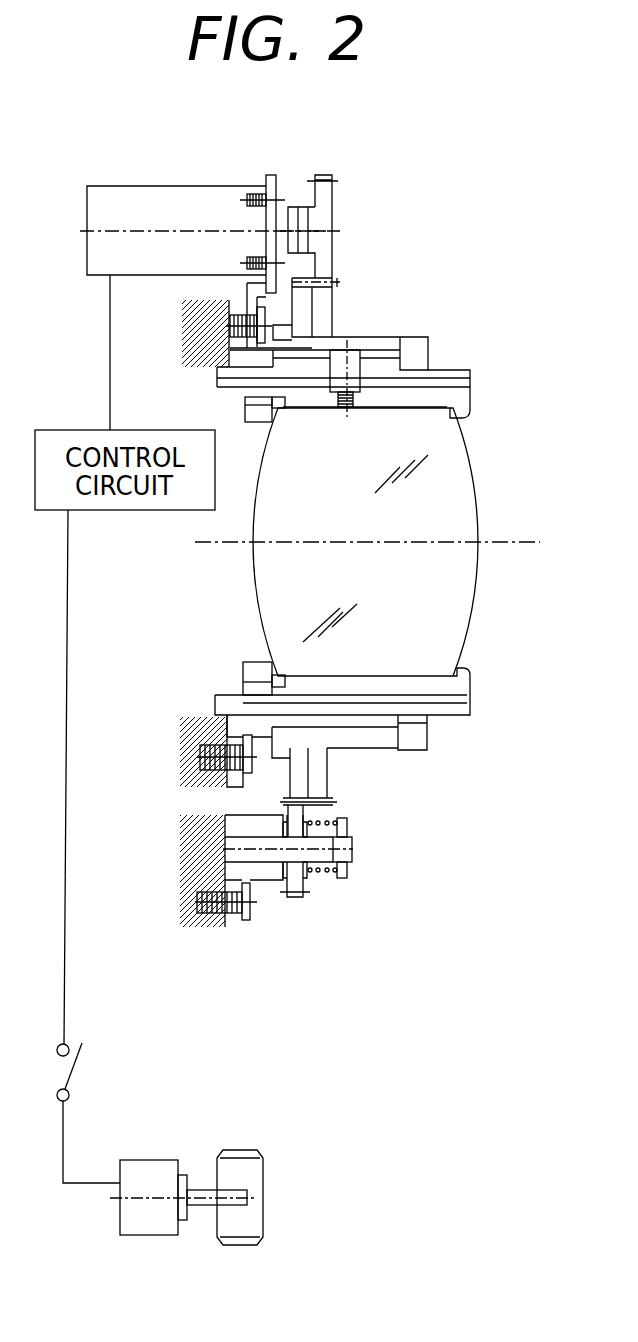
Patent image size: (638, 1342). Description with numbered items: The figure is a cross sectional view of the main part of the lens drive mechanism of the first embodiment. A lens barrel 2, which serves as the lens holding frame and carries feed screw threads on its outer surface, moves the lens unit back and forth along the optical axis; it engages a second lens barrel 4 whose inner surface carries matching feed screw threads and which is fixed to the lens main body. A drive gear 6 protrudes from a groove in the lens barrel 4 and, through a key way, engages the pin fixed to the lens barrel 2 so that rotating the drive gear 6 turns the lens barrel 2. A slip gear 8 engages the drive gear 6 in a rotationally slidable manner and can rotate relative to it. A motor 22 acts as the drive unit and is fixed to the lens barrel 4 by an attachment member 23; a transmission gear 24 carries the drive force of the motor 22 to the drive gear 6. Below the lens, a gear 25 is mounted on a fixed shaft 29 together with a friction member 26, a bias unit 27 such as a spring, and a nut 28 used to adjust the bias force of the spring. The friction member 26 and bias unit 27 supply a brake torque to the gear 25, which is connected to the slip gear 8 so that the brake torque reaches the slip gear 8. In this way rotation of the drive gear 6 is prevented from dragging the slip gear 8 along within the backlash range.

The lens barrel 2 is at (460, 397).
The lens barrel 4 is at (262, 366).
The drive gear 6 is at (320, 305).
The slip gear 8 is at (298, 777).
The motor 22 is at (220, 187).
The attachment member 23 is at (272, 173).
The transmission gear 24 is at (327, 210).
The gear 25 is at (292, 890).
The friction member 26 is at (282, 873).
The bias unit 27 is at (325, 875).
The nut 28 is at (347, 825).
The fixed shaft 29 is at (352, 850).